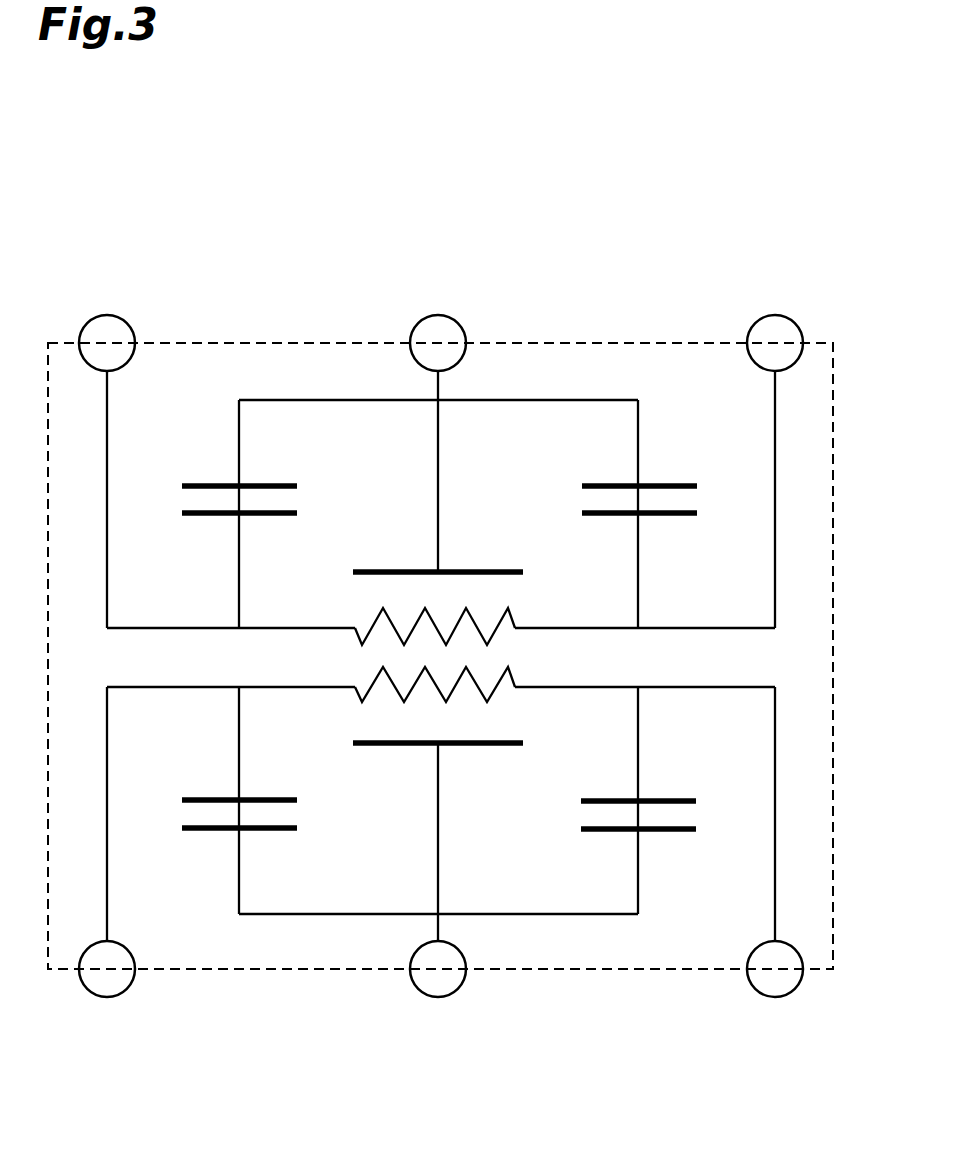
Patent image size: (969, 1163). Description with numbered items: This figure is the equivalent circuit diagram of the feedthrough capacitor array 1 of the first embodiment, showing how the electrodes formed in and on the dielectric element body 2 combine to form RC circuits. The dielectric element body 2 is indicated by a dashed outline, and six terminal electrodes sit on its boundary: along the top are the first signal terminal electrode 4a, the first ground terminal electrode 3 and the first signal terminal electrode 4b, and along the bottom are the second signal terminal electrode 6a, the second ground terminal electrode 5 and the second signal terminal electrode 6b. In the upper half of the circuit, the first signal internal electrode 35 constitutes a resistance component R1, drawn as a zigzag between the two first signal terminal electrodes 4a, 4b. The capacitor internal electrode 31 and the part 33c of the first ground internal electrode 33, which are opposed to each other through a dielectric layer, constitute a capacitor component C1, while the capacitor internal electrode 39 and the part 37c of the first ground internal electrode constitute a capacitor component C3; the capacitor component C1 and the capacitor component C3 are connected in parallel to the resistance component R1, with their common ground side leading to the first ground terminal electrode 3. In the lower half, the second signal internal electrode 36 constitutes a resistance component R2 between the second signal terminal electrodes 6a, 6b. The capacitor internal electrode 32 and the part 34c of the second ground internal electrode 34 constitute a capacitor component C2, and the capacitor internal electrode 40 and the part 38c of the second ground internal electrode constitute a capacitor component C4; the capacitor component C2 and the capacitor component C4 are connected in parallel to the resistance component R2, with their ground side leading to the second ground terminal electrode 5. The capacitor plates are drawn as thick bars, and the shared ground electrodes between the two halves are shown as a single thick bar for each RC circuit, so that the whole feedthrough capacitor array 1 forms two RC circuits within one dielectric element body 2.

The feedthrough capacitor array 1 is at (806, 137).
The dielectric element body 2 is at (834, 404).
The first ground terminal electrode 3 is at (442, 315).
The first signal terminal electrode 4a is at (112, 315).
The first signal terminal electrode 4b is at (774, 316).
The second ground terminal electrode 5 is at (436, 998).
The second signal terminal electrode 6a is at (104, 998).
The second signal terminal electrode 6b is at (773, 998).
The capacitor internal electrode 31 is at (217, 516).
The capacitor internal electrode 32 is at (217, 797).
The first ground internal electrode 33 is at (472, 568).
The second ground internal electrode 34 is at (392, 747).
The first signal internal electrode 35 is at (517, 625).
The second signal internal electrode 36 is at (508, 681).
The capacitor internal electrode 39 is at (662, 516).
The capacitor internal electrode 40 is at (660, 799).
The part of first ground internal electrode 33c is at (218, 484).
The part of second ground internal electrode 34c is at (215, 831).
The part of first ground internal electrode 37c is at (660, 484).
The part of second ground internal electrode 38c is at (662, 832).
The capacitor component C1 is at (175, 467).
The capacitor component C2 is at (175, 782).
The capacitor component C3 is at (698, 467).
The capacitor component C4 is at (698, 785).
The resistance component R1 is at (436, 625).
The resistance component R2 is at (440, 695).